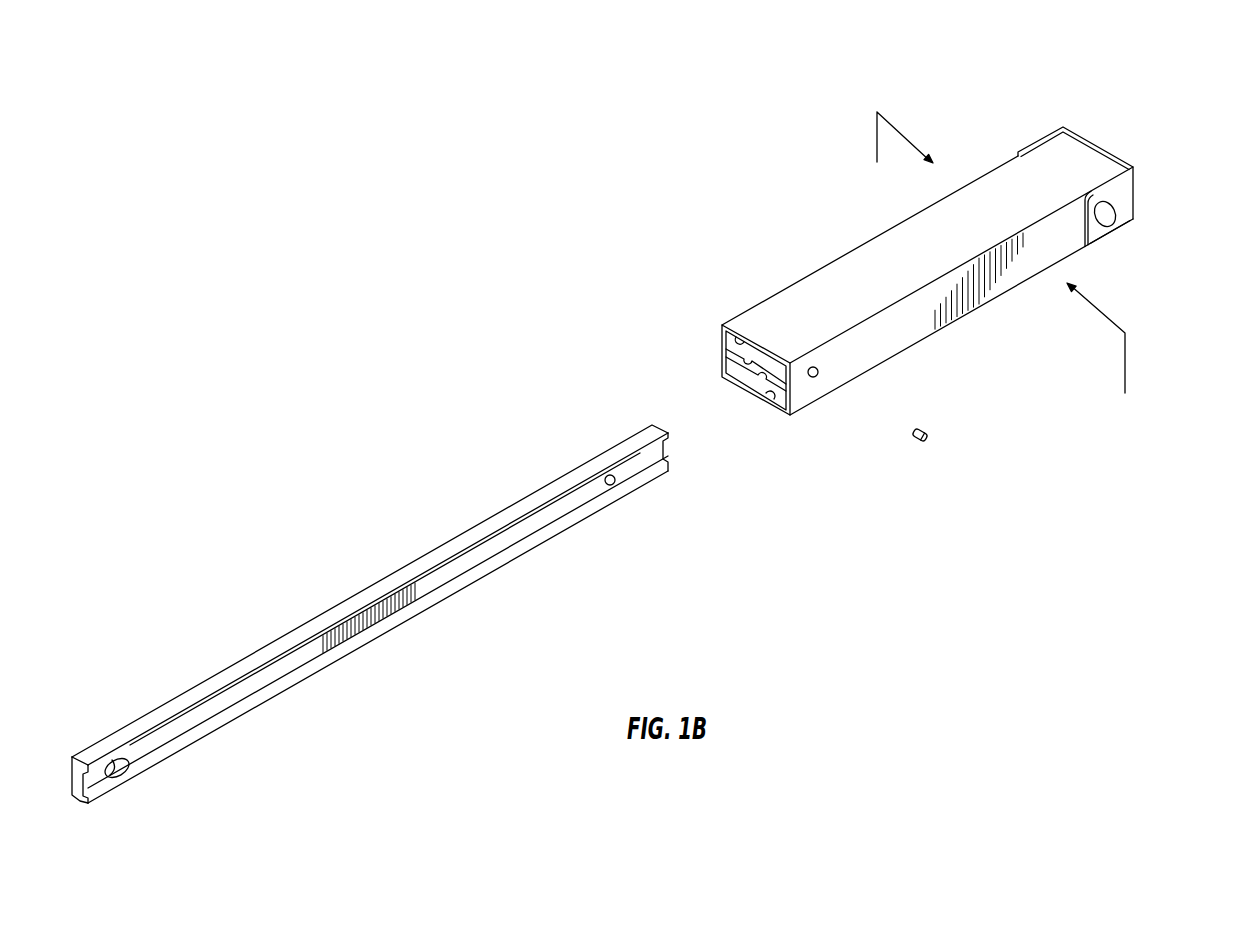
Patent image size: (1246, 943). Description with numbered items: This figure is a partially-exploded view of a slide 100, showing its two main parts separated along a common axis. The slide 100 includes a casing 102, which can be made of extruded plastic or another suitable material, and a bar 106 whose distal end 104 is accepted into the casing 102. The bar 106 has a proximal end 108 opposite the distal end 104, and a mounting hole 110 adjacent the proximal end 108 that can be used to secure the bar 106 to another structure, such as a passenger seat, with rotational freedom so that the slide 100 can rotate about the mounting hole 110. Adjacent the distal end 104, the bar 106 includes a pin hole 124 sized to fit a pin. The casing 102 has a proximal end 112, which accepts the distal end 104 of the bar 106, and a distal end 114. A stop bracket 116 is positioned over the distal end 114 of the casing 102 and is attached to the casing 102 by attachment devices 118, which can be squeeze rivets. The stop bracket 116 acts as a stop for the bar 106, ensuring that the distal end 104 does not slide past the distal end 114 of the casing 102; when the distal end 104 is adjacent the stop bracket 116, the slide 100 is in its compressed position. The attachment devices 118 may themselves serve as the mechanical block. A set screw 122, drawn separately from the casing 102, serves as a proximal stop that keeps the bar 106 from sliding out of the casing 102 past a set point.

The slide 100 is at (330, 265).
The casing 102 is at (804, 300).
The distal end of bar 104 is at (641, 386).
The bar 106 is at (340, 610).
The proximal end of bar 108 is at (91, 713).
The mounting hole 110 is at (182, 767).
The proximal end of casing 112 is at (740, 440).
The distal end of casing 114 is at (1135, 122).
The stop bracket 116 is at (1127, 182).
The attachment devices 118 is at (1112, 215).
The set screw 122 is at (918, 450).
The pin hole 124 is at (636, 500).